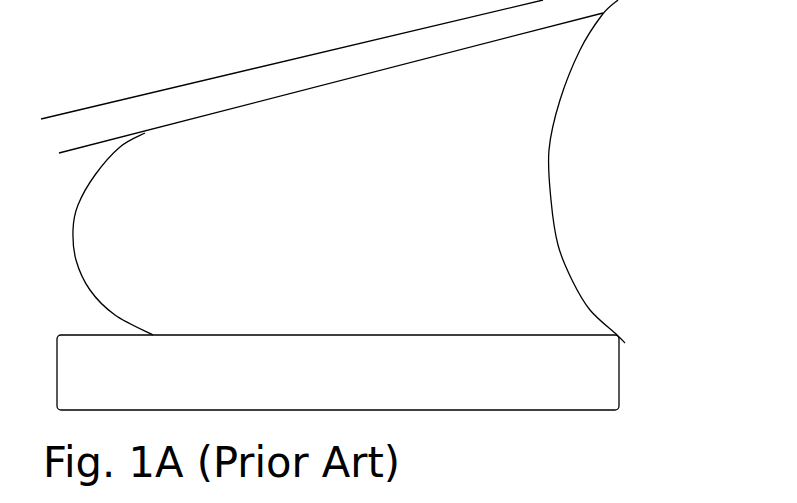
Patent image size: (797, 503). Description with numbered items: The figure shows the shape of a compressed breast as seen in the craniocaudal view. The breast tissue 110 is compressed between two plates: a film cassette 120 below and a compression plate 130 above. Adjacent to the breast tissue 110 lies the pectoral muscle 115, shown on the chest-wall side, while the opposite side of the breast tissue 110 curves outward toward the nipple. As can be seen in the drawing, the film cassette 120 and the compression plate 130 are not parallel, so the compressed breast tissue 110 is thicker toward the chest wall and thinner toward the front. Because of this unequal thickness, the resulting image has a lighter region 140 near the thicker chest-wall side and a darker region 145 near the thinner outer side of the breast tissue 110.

The breast tissue 110 is at (295, 246).
The pectoral muscle 115 is at (678, 172).
The film cassette 120 is at (264, 396).
The compression plate 130 is at (253, 57).
The lighter region 140 is at (520, 198).
The darker region 145 is at (130, 239).